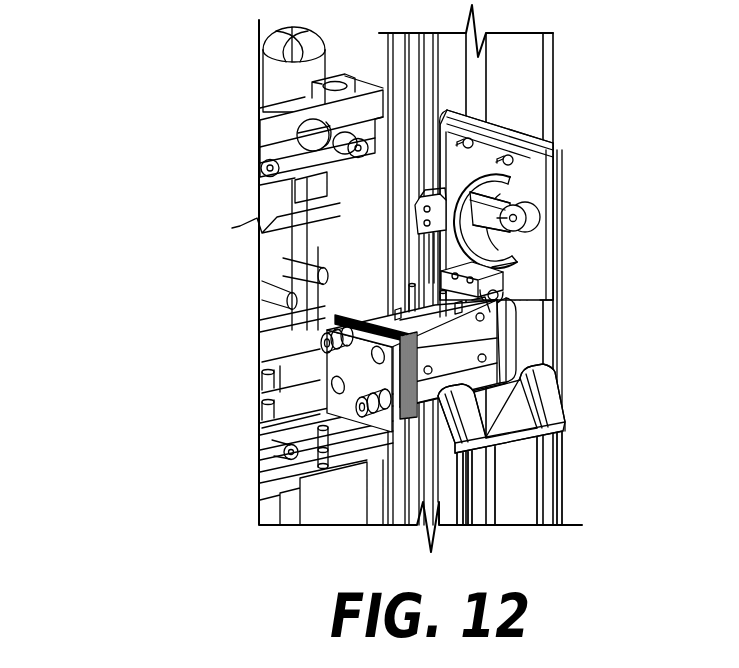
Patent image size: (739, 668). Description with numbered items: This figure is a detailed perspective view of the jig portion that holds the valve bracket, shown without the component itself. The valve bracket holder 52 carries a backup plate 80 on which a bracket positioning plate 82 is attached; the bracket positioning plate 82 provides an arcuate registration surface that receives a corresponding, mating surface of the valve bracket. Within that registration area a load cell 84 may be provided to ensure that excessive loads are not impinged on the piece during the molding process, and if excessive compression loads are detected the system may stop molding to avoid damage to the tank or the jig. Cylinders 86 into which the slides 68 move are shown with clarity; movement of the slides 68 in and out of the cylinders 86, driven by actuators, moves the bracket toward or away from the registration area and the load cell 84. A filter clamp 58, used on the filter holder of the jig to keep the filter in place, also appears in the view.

The valve bracket holder 52 is at (174, 88).
The filter clamp 58 is at (543, 445).
The slides 68 is at (510, 343).
The backup plate 80 is at (548, 152).
The bracket positioning plate 82 is at (473, 158).
The load cell 84 is at (513, 218).
The cylinders 86 is at (407, 327).